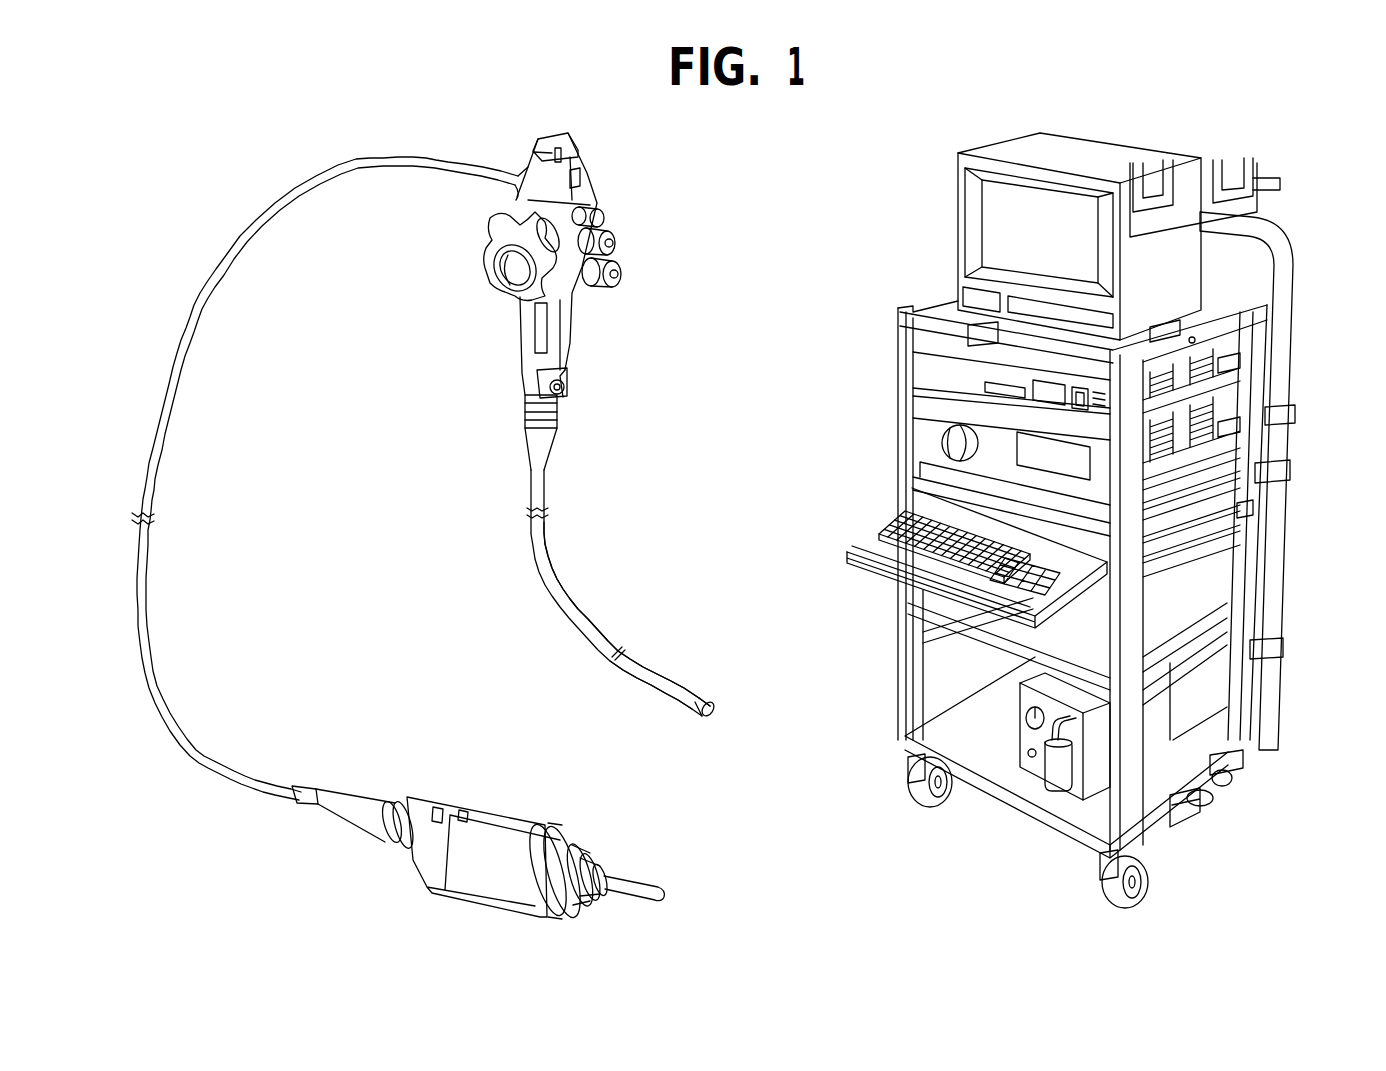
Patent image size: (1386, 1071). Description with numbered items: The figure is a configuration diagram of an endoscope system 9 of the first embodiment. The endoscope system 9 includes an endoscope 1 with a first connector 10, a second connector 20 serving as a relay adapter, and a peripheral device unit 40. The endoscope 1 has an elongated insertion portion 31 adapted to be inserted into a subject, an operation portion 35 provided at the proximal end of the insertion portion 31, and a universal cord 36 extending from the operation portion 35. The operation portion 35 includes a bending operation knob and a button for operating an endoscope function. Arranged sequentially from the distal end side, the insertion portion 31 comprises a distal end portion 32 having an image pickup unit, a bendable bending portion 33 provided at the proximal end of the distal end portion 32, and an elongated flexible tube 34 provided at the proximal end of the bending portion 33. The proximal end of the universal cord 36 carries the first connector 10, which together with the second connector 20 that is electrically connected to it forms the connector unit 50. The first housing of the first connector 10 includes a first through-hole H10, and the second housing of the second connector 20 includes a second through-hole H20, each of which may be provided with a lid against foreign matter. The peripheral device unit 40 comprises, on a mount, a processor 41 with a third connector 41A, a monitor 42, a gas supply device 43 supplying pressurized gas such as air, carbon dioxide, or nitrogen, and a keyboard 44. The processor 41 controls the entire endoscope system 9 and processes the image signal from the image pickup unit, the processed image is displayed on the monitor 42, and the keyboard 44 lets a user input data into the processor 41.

The endoscope system 9 is at (128, 118).
The endoscope 1 is at (644, 176).
The insertion portion 31 is at (742, 580).
The distal end portion 32 is at (710, 697).
The bending portion 33 is at (652, 668).
The flexible tube portion 34 is at (573, 598).
The operation portion 35 is at (492, 262).
The universal cord 36 is at (150, 558).
The first connector unit 50 is at (395, 915).
The first connector 10 is at (405, 862).
The second connector 20 is at (470, 900).
The first through-hole H10 is at (441, 808).
The second through-hole H20 is at (461, 810).
The peripheral device unit 40 is at (886, 213).
The processor 41 is at (912, 427).
The third connector 41A is at (947, 435).
The monitor 42 is at (954, 178).
The gas supply device 43 is at (1028, 777).
The keyboard 44 is at (863, 572).